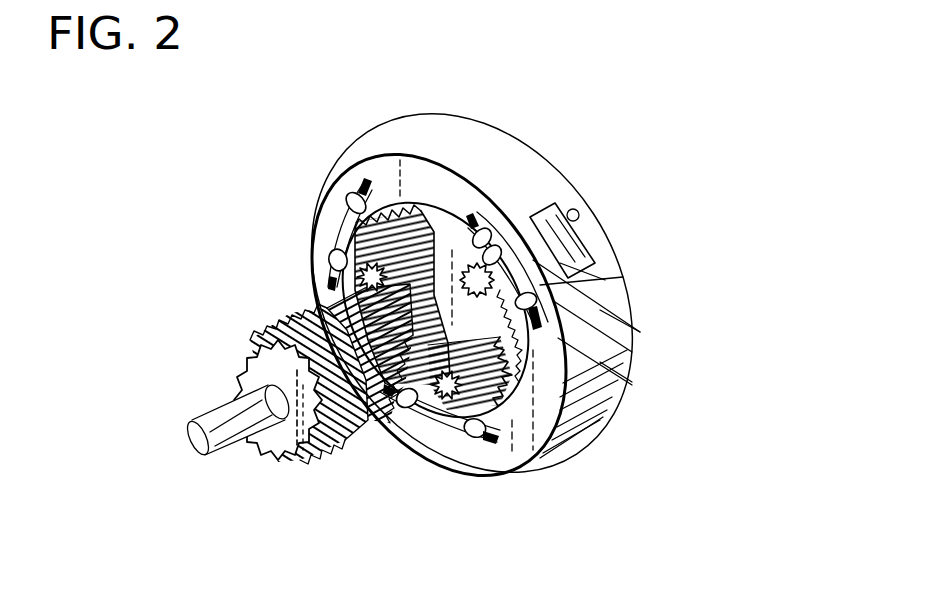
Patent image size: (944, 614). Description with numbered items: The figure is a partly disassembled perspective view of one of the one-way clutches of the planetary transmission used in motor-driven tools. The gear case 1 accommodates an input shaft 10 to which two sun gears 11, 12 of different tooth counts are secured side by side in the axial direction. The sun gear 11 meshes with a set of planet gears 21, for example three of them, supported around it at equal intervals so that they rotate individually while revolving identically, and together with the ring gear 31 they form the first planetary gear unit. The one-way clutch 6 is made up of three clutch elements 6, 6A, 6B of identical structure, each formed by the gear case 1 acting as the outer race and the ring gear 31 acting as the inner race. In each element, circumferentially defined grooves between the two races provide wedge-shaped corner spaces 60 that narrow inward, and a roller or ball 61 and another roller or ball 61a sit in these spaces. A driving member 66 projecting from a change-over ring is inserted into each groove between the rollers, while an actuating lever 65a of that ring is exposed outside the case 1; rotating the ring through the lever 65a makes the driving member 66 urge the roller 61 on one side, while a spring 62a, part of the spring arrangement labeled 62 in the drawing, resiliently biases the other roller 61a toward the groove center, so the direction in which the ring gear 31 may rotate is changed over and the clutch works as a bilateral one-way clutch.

The gear case 1 is at (603, 417).
The one-way clutch 6 is at (545, 252).
The clutch element 6A is at (430, 415).
The clutch element 6B is at (320, 200).
The input shaft 10 is at (222, 413).
The sun gear 11 is at (275, 318).
The sun gear 12 is at (340, 305).
The planet gears 21 is at (394, 162).
The ring gear 31 is at (437, 200).
The wedge-shaped corner spaces 60 is at (550, 303).
The roller or ball 61 is at (502, 208).
The roller or ball 61a is at (640, 332).
The cage segment 62 is at (483, 205).
The spring 62a is at (632, 384).
The actuating lever 65a is at (580, 212).
The driving member 66 is at (540, 272).